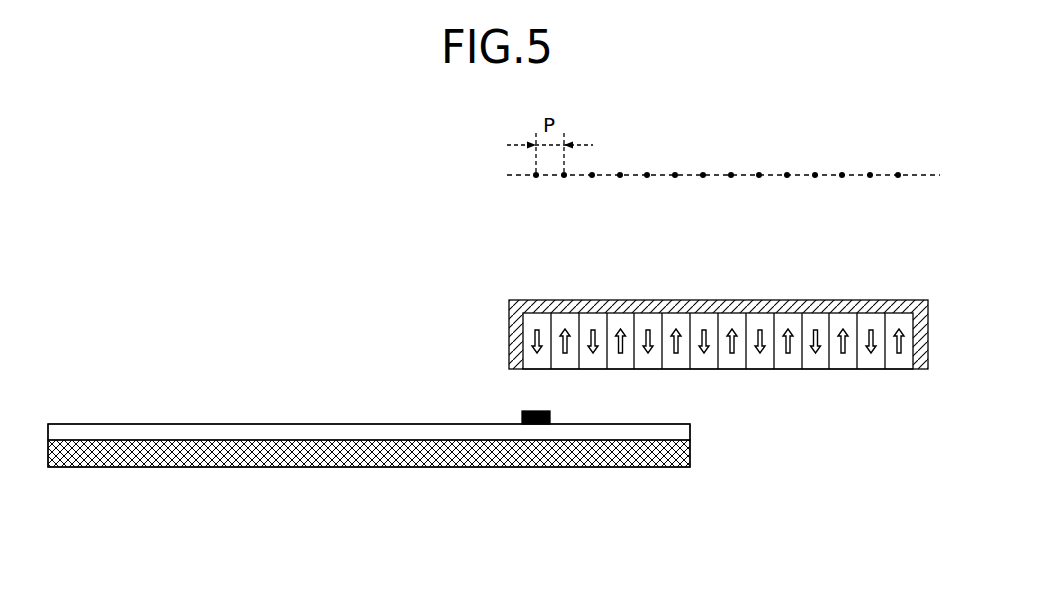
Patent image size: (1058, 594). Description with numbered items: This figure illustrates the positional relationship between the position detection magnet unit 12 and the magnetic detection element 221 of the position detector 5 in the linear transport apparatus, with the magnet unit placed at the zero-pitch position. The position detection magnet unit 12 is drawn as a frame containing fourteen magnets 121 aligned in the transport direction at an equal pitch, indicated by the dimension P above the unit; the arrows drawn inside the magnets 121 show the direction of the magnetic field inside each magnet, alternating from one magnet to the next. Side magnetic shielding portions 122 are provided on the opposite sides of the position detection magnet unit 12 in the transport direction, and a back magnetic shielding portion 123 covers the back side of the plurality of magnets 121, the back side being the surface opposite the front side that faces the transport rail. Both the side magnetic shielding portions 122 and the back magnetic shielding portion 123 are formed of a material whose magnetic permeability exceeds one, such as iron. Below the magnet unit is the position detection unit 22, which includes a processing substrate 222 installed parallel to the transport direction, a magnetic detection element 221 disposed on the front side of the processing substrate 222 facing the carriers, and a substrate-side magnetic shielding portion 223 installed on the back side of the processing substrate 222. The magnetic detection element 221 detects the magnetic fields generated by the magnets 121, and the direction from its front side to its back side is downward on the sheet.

The position detector 5 is at (858, 246).
The position detection magnet unit 12 is at (928, 318).
The magnets 121 is at (565, 315).
The side magnetic shielding portions 122 is at (509, 314).
The back magnetic shielding portion 123 is at (733, 303).
The position detection unit 22 is at (690, 452).
The magnetic detection element 221 is at (540, 426).
The processing substrate 222 is at (333, 432).
The substrate-side magnetic shielding portion 223 is at (640, 468).